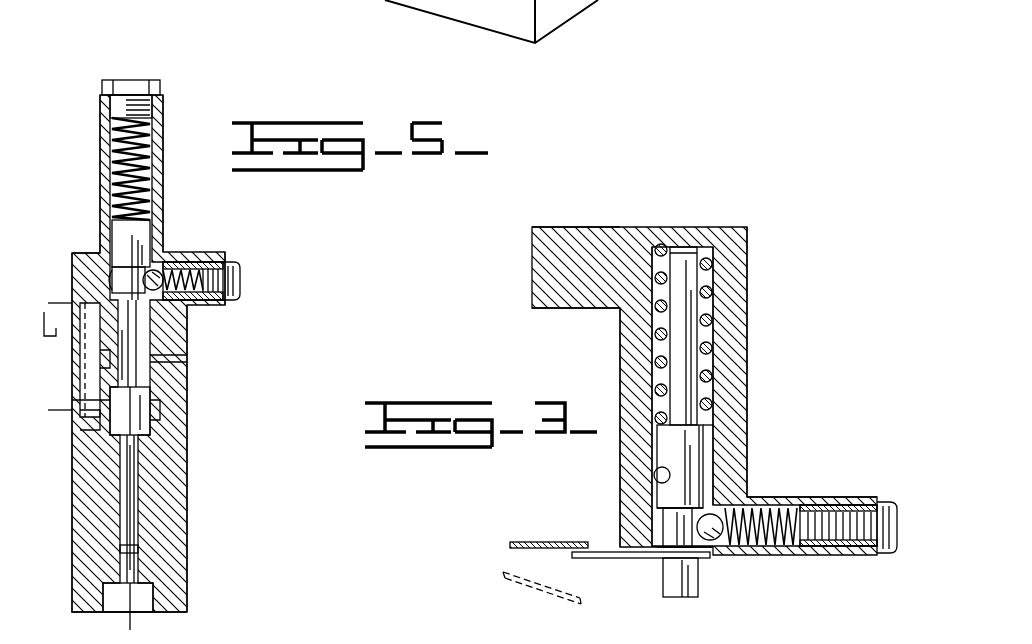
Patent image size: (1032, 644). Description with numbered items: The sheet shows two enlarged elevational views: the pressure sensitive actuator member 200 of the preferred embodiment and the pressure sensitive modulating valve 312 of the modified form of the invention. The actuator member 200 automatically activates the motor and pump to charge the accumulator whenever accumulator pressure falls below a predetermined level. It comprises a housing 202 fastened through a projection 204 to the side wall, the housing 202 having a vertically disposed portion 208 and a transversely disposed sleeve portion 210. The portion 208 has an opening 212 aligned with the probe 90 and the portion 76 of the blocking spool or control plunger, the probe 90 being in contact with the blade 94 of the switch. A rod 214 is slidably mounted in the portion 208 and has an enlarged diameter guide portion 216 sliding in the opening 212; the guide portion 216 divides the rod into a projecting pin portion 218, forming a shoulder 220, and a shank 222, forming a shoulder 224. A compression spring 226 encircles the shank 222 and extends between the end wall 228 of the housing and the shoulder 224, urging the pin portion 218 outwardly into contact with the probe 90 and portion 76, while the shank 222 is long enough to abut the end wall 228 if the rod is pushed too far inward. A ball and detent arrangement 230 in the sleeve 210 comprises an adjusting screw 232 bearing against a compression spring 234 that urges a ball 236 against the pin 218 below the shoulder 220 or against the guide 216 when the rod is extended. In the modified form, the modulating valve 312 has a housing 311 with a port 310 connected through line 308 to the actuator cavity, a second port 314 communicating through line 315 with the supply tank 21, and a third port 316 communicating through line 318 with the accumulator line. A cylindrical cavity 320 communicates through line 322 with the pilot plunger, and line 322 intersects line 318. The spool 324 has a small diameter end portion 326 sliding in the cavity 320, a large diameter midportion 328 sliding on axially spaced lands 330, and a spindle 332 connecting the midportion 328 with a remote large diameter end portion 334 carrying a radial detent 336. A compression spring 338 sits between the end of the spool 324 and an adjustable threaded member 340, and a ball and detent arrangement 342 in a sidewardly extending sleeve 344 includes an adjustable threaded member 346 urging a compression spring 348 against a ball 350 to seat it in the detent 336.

In FIG. 5, the adjustable threaded member 340 is at (140, 80).
In FIG. 5, the compression spring 338 is at (116, 134).
In FIG. 5, the remote large diameter end portion 334 is at (118, 238).
In FIG. 5, the radial detent 336 is at (110, 268).
In FIG. 5, the spindle 332 is at (130, 333).
In FIG. 5, the ball 350 is at (160, 268).
In FIG. 5, the compression spring 348 is at (172, 268).
In FIG. 5, the ball and detent arrangement 342 is at (232, 247).
In FIG. 5, the adjustable threaded member 346 is at (236, 265).
In FIG. 5, the sidewardly extending sleeve 344 is at (226, 300).
In FIG. 5, the second port 314 is at (92, 302).
In FIG. 5, the line 315 is at (48, 303).
In FIG. 5, the supply tank 21 is at (44, 330).
In FIG. 5, the axially spaced lands 330 is at (103, 360).
In FIG. 5, the line 308 is at (185, 360).
In FIG. 5, the port 310 is at (176, 360).
In FIG. 5, the third port 316 is at (80, 405).
In FIG. 5, the large diameter midportion 328 is at (146, 392).
In FIG. 5, the spool 324 is at (106, 433).
In FIG. 5, the housing 311 is at (182, 432).
In FIG. 5, the modulating valve 312 is at (192, 472).
In FIG. 5, the line 318 is at (48, 410).
In FIG. 5, the small diameter end portion 326 is at (125, 513).
In FIG. 5, the cylindrical cavity 320 is at (128, 548).
In FIG. 5, the line 322 is at (130, 620).
In FIG. 3, the actuator member 200 is at (741, 230).
In FIG. 3, the projection 204 is at (570, 237).
In FIG. 3, the end wall 228 is at (680, 240).
In FIG. 3, the compression spring 226 is at (713, 288).
In FIG. 3, the housing 202 is at (634, 333).
In FIG. 3, the vertically disposed portion 208 is at (737, 342).
In FIG. 3, the shank 222 is at (680, 340).
In FIG. 3, the rod 214 is at (670, 375).
In FIG. 3, the enlarged diameter guide portion 216 is at (680, 435).
In FIG. 3, the shoulder 224 is at (700, 423).
In FIG. 3, the opening 212 is at (656, 474).
In FIG. 3, the shoulder 220 is at (662, 522).
In FIG. 3, the ball 236 is at (713, 541).
In FIG. 3, the compression spring 234 is at (790, 545).
In FIG. 3, the transversely disposed sleeve portion 210 is at (800, 505).
In FIG. 3, the ball and detent arrangement 230 is at (772, 495).
In FIG. 3, the adjusting screw 232 is at (886, 506).
In FIG. 3, the blade 94 is at (525, 540).
In FIG. 3, the probe 90 is at (595, 560).
In FIG. 3, the projecting pin portion 218 is at (676, 546).
In FIG. 3, the portion of blocking spool 76 is at (680, 596).